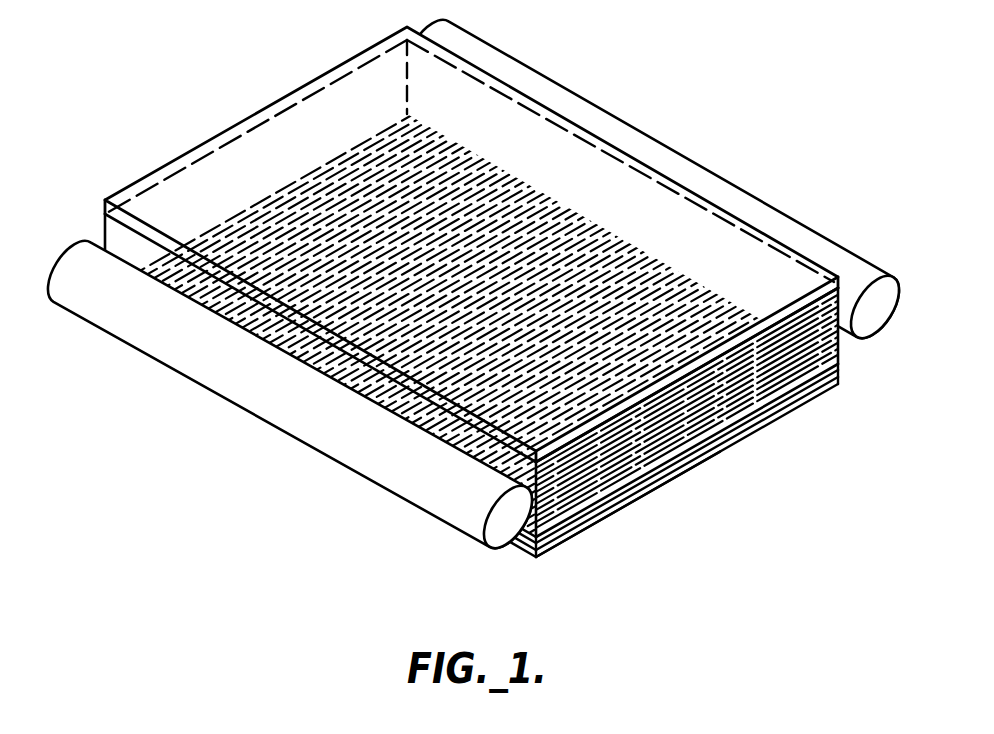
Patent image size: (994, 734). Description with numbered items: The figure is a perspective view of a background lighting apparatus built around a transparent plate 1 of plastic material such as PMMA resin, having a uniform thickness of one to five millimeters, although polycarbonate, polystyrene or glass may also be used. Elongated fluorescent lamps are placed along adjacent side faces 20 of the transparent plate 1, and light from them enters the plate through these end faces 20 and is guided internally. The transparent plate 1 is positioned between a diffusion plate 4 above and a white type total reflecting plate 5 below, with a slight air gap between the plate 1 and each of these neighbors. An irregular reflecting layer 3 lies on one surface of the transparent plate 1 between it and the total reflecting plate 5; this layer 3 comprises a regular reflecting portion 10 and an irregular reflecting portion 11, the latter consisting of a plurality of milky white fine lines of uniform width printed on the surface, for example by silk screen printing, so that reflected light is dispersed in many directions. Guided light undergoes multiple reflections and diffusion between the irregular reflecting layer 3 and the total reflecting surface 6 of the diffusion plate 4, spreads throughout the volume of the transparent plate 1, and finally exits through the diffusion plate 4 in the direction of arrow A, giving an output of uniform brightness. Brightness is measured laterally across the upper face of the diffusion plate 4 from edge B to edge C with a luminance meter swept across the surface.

The transparent plate 1 is at (828, 338).
The irregular reflecting layer 3 is at (838, 372).
The diffusion plate 4 is at (750, 252).
The total reflecting plate 5 is at (817, 393).
The total reflecting surface 6 is at (838, 276).
The regular reflecting portion 10 is at (773, 400).
The irregular reflecting portion 11 is at (710, 452).
The side faces 20 is at (105, 240).
The arrow A is at (308, 135).
The edge B is at (323, 327).
The edge C is at (625, 157).